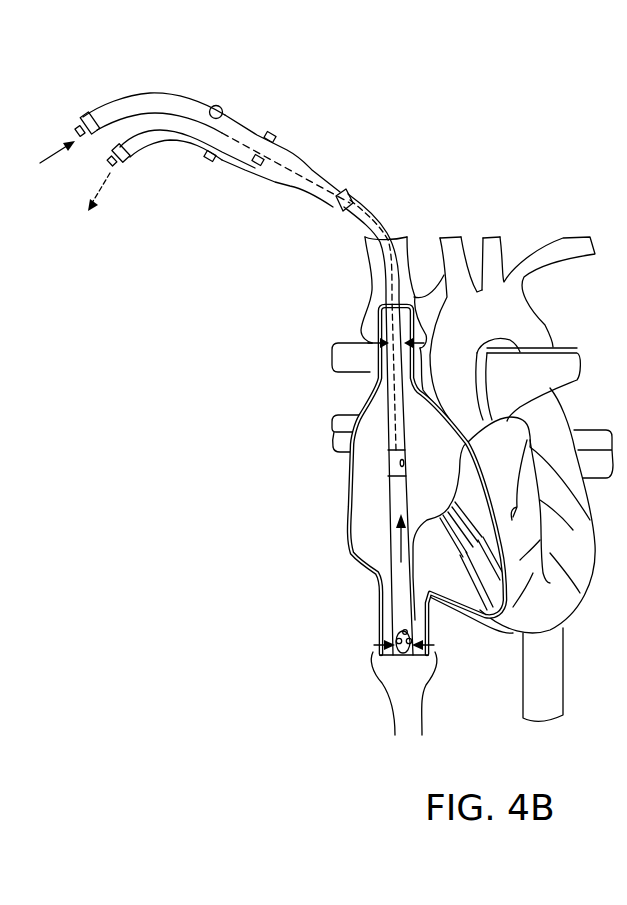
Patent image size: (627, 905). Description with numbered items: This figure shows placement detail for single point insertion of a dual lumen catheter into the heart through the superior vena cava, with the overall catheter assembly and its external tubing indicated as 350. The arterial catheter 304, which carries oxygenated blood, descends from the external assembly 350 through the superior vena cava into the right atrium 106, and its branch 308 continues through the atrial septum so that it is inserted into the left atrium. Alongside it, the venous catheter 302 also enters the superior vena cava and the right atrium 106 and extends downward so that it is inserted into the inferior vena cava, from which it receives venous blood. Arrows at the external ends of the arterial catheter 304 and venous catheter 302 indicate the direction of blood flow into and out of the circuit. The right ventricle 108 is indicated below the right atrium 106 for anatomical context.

The fluid circuit / handle assembly 350 is at (188, 76).
The arterial catheter 304 is at (93, 114).
The venous catheter 302 is at (141, 160).
The branch of arterial catheter 308 is at (389, 468).
The right atrium 106 is at (372, 540).
The right ventricle 108 is at (460, 587).